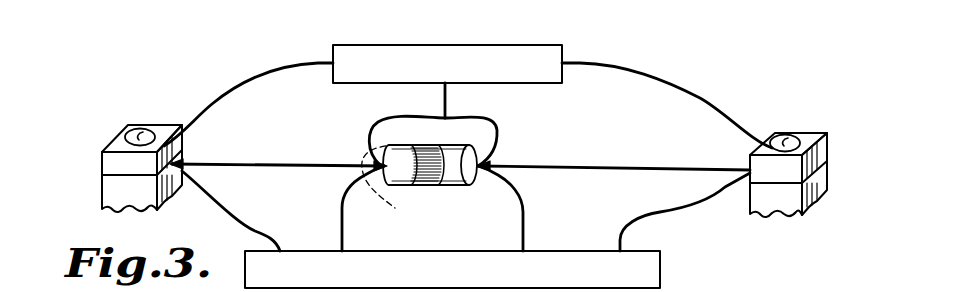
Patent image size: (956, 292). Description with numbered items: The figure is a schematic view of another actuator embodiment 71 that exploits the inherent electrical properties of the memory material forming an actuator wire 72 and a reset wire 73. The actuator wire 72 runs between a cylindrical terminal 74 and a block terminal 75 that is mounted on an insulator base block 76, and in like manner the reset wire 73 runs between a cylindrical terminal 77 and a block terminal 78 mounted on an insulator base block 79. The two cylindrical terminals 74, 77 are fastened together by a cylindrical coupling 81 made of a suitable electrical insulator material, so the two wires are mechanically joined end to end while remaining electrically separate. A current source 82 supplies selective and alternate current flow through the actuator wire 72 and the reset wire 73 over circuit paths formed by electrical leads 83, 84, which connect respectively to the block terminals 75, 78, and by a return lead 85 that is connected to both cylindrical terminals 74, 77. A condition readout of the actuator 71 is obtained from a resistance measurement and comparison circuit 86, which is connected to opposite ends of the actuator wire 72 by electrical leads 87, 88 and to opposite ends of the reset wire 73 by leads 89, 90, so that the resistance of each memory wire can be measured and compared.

The actuator embodiment 71 is at (767, 108).
The actuator wire 72 is at (268, 163).
The reset wire 73 is at (612, 163).
The cylindrical terminal 74 is at (395, 208).
The block terminal 75 is at (102, 162).
The insulator base block 76 is at (102, 193).
The cylindrical terminal 77 is at (464, 188).
The block terminal 78 is at (830, 145).
The insulator base block 79 is at (830, 178).
The cylindrical coupling 81 is at (436, 188).
The current source 82 is at (540, 84).
The electrical lead 83 is at (231, 88).
The electrical lead 84 is at (695, 93).
The return lead 85 is at (447, 102).
The resistance measurement and comparison circuit 86 is at (660, 280).
The electrical lead 87 is at (220, 205).
The electrical lead 88 is at (342, 207).
The lead 89 is at (523, 207).
The lead 90 is at (690, 209).